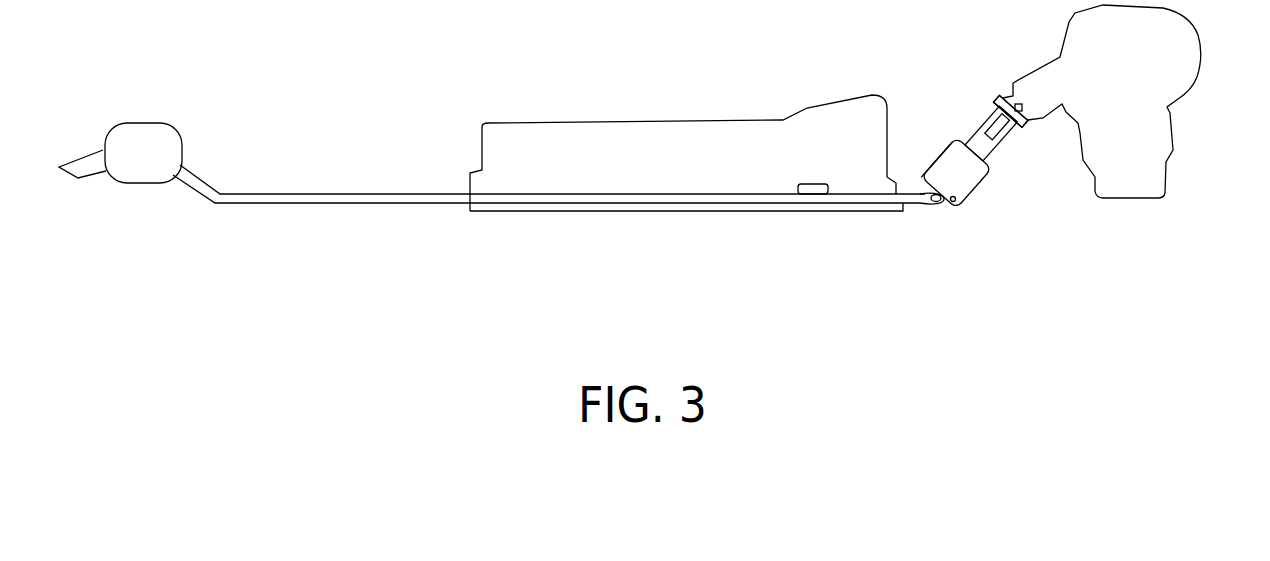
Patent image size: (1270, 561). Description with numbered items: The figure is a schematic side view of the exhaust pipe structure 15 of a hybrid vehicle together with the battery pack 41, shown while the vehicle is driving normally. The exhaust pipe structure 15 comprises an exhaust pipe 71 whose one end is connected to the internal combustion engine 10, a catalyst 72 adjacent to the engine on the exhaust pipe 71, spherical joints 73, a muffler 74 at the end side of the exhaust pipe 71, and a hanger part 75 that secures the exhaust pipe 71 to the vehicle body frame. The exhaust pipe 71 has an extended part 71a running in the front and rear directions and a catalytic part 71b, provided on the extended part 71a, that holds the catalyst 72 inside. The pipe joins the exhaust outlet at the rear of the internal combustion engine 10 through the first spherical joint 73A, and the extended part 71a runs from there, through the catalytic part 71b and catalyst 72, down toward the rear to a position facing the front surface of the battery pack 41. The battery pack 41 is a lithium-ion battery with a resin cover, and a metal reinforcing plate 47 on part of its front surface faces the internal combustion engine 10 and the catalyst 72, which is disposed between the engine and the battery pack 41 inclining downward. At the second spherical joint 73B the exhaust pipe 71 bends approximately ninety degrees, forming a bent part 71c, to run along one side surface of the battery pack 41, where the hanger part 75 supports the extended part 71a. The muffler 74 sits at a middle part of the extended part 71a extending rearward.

The internal combustion engine 10 is at (1204, 52).
The exhaust pipe structure 15 is at (984, 204).
The battery pack 41 is at (751, 120).
The reinforcing plate 47 is at (894, 180).
The exhaust pipe 71 is at (433, 173).
The extended part 71a is at (428, 205).
The catalytic part 71b is at (946, 157).
The bent part 71c is at (920, 210).
The catalyst 72 is at (987, 175).
The spherical joint 73 is at (982, 150).
The first spherical joint 73A is at (998, 98).
The second spherical joint 73B is at (942, 217).
The muffler 74 is at (148, 121).
The hanger part 75 is at (812, 183).